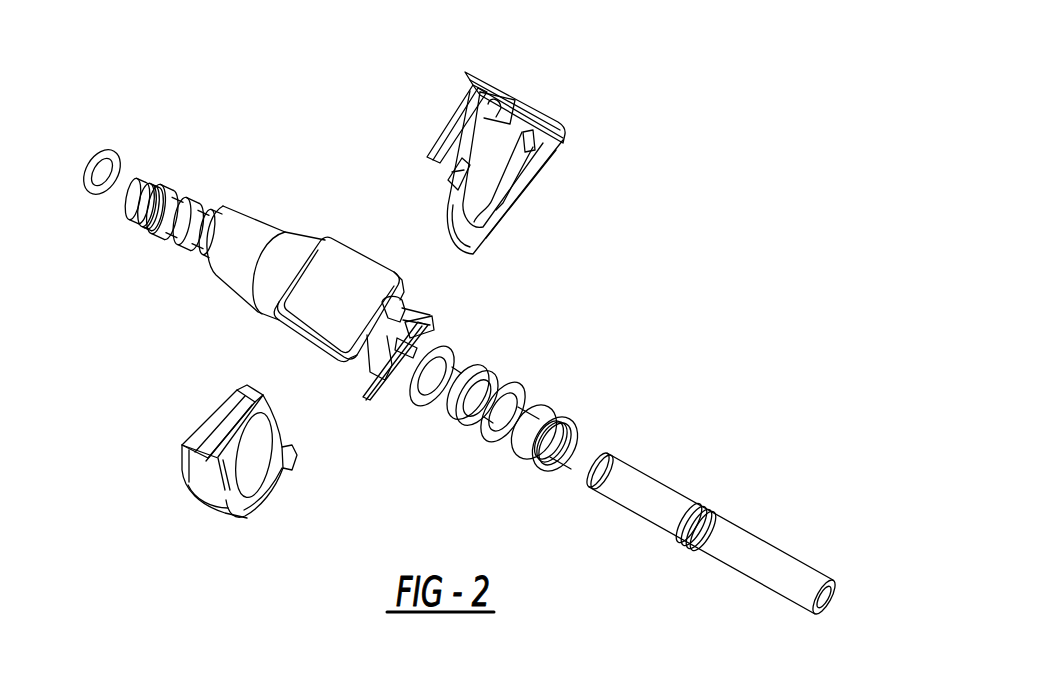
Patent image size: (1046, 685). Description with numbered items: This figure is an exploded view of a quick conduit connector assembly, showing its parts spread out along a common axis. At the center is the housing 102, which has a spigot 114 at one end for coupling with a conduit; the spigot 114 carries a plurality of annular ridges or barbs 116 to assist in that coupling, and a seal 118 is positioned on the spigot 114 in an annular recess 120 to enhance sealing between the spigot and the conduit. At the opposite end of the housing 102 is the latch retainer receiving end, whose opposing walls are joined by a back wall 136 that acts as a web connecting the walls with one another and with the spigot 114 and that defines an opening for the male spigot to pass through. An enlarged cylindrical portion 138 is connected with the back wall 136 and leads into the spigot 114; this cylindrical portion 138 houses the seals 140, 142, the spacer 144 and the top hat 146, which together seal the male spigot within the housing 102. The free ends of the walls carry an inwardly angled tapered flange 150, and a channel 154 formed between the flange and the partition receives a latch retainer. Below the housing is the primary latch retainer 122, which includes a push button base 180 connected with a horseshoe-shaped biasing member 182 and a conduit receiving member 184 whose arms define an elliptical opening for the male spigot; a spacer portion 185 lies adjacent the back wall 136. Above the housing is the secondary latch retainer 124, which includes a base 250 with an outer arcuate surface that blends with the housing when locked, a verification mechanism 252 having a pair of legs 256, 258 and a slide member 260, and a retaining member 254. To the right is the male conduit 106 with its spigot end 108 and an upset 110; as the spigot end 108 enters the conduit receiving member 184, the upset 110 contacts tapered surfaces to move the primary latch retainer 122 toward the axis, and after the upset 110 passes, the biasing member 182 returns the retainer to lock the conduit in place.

The housing 102 is at (302, 284).
The male conduit 106 is at (784, 553).
The spigot end 108 is at (711, 507).
The upset 110 is at (689, 545).
The spigot 114 is at (185, 191).
The annular ridges or barbs 116 is at (196, 202).
The seal 118 is at (101, 150).
The annular recess 120 is at (163, 186).
The primary latch retainer 122 is at (212, 483).
The secondary latch retainer 124 is at (515, 138).
The back wall 136 is at (296, 352).
The enlarged cylindrical portion 138 is at (270, 270).
The seal 140 is at (450, 350).
The seal 142 is at (532, 400).
The spacer 144 is at (492, 374).
The top hat 146 is at (571, 418).
The inwardly angled tapered flange 150 is at (400, 418).
The channel 154 is at (424, 318).
The push button base 180 is at (200, 500).
The biasing member 182 is at (283, 496).
The conduit receiving member 184 is at (224, 413).
The spacer portion 185 is at (198, 450).
The base 250 is at (511, 91).
The verification mechanism 252 is at (420, 146).
The retaining member 254 is at (494, 105).
The leg 256 is at (452, 186).
The leg 258 is at (494, 110).
The slide member 260 is at (545, 158).